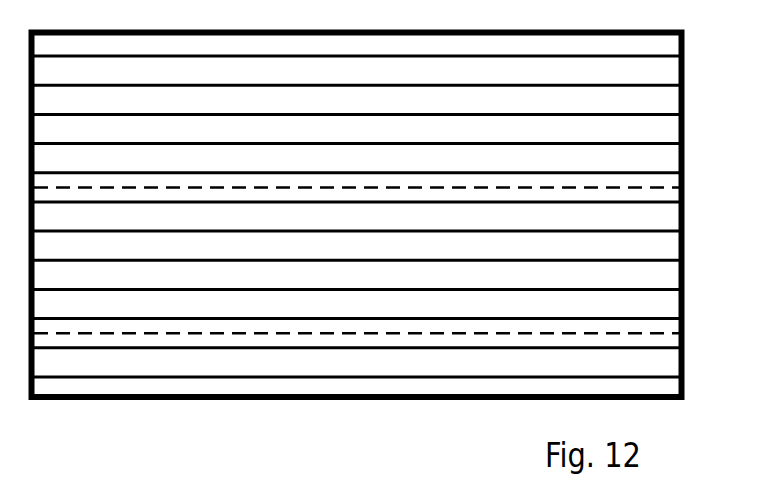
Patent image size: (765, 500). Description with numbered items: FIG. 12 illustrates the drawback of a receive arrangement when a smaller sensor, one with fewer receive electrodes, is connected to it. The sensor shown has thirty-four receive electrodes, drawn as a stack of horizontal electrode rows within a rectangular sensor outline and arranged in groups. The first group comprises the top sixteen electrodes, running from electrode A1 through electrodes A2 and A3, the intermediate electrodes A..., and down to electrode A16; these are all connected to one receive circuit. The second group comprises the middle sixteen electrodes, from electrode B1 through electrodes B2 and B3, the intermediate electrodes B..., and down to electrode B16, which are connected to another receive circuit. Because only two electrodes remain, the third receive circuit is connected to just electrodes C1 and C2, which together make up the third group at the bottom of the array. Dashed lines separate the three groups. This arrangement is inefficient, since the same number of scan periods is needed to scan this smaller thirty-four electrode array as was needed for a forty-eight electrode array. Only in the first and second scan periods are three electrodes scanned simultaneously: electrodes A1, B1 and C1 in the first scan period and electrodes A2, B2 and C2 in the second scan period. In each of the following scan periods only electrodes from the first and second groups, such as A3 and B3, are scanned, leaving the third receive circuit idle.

The receive electrode A1 is at (374, 61).
The receive electrode A2 is at (374, 90).
The receive electrode A3 is at (374, 119).
The receive electrodes A... is at (376, 148).
The receive electrode A16 is at (379, 177).
The receive electrode B1 is at (374, 206).
The receive electrode B2 is at (374, 235).
The receive electrode B3 is at (374, 264).
The receive electrodes B... is at (377, 294).
The receive electrode B16 is at (379, 323).
The receive electrode C1 is at (374, 352).
The receive electrode C2 is at (374, 381).